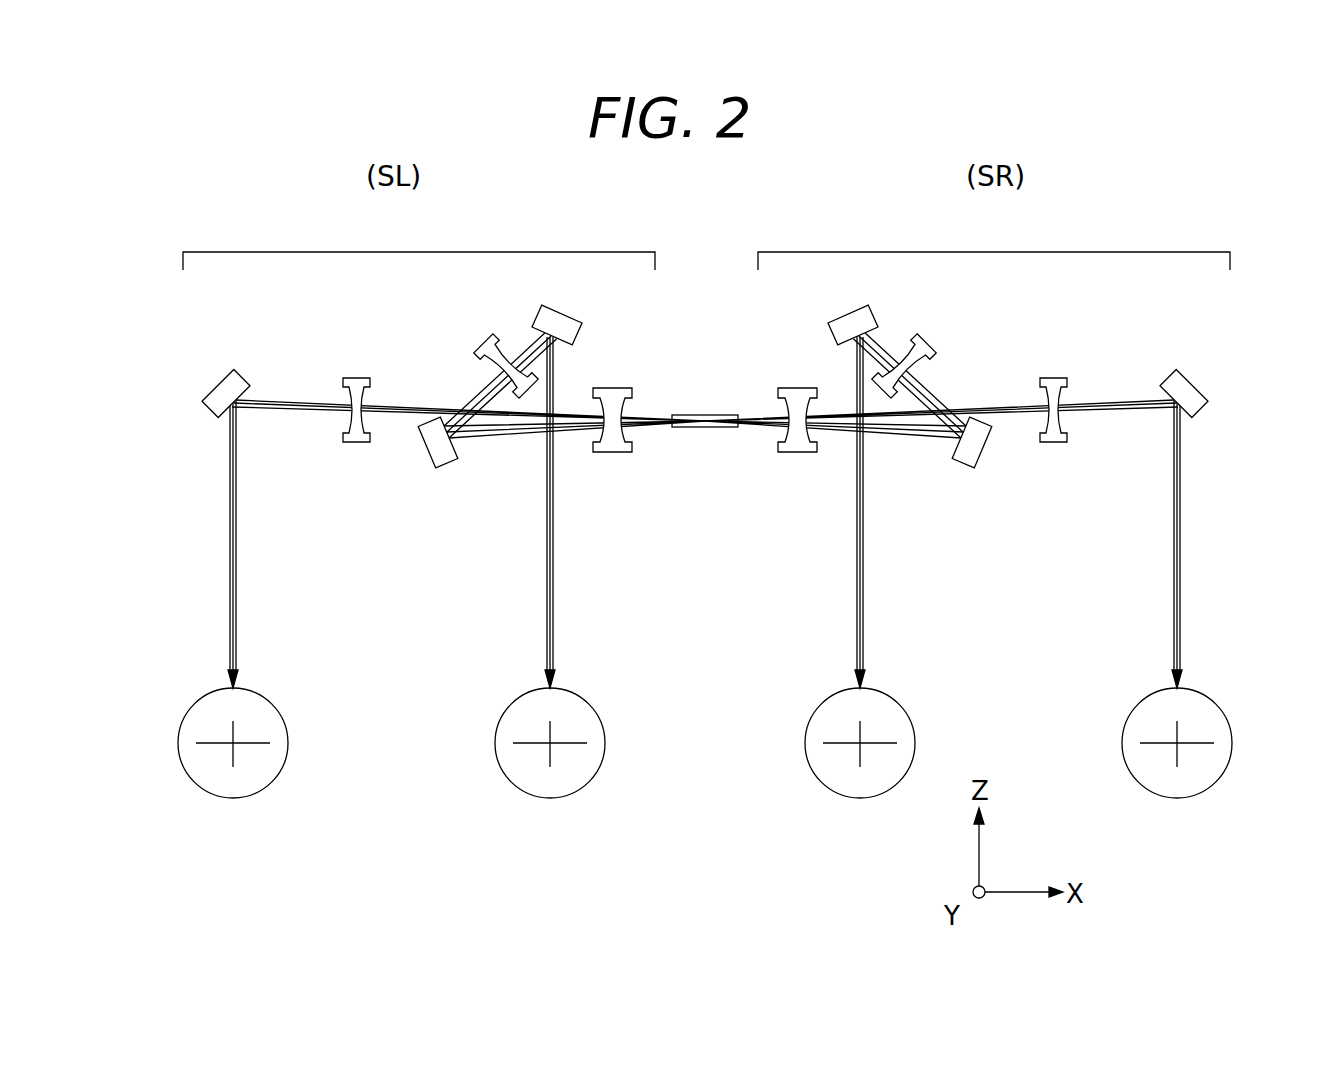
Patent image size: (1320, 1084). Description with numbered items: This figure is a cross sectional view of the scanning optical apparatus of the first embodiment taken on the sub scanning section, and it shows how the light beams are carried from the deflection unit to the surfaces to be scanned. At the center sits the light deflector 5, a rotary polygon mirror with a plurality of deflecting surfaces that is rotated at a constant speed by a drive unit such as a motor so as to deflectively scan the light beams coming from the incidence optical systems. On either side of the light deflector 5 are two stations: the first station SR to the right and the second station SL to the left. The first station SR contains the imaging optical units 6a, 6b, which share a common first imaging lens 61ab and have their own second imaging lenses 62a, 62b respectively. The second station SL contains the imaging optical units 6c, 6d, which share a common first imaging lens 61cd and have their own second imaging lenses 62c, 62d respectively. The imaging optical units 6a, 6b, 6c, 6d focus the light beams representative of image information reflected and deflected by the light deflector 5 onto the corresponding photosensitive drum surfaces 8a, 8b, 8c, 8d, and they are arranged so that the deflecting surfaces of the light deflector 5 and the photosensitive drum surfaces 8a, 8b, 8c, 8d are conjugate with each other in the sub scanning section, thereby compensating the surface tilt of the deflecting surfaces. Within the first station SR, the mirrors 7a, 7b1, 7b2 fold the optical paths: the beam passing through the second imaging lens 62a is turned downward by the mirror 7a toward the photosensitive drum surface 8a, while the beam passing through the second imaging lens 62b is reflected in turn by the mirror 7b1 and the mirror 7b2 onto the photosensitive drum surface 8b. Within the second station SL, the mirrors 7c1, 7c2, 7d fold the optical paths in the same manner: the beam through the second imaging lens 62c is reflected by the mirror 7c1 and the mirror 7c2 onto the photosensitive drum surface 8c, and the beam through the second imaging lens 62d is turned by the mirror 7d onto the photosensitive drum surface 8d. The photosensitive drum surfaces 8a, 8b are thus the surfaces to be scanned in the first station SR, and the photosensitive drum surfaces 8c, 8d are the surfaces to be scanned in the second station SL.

The light deflector 5 is at (705, 414).
The imaging optical unit 6a is at (994, 242).
The imaging optical unit 6b is at (994, 242).
The imaging optical unit 6c is at (419, 242).
The imaging optical unit 6d is at (419, 242).
The mirror 7a is at (1197, 414).
The mirror 7b1 is at (968, 462).
The mirror 7b2 is at (840, 320).
The mirror 7c1 is at (442, 462).
The mirror 7c2 is at (570, 320).
The mirror 7d is at (213, 414).
The photosensitive drum surface 8a is at (1206, 692).
The photosensitive drum surface 8b is at (889, 692).
The photosensitive drum surface 8c is at (579, 692).
The photosensitive drum surface 8d is at (262, 692).
The first imaging lens 61ab is at (800, 453).
The first imaging lens 61cd is at (610, 453).
The second imaging lens 62a is at (1054, 443).
The second imaging lens 62b is at (928, 353).
The second imaging lens 62c is at (482, 353).
The second imaging lens 62d is at (356, 443).